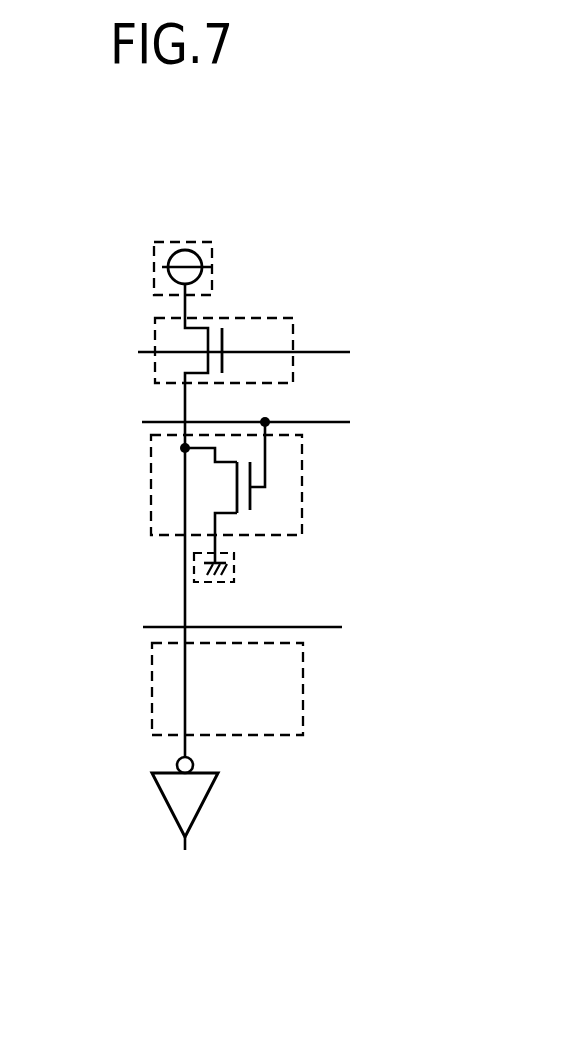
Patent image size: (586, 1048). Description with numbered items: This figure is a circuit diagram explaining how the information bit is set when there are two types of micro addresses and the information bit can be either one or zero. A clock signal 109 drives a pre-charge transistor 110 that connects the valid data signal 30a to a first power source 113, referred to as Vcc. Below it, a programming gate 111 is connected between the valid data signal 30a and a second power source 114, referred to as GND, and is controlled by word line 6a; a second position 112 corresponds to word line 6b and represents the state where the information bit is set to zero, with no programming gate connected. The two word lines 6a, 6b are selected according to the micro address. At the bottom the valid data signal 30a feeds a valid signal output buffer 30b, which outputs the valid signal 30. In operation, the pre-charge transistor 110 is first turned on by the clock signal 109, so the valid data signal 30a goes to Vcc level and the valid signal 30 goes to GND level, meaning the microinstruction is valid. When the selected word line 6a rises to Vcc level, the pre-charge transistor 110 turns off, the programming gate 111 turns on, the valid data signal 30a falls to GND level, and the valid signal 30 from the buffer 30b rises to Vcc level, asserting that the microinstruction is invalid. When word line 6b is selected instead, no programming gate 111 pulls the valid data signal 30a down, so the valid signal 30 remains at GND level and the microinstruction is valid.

The word line 6a is at (333, 418).
The word line 6b is at (335, 627).
The valid signal 30 is at (192, 838).
The valid data signal 30a is at (180, 592).
The valid signal output buffer 30b is at (218, 790).
The clock signal 109 is at (333, 348).
The pre-charge transistor 110 is at (262, 318).
The programming gate 111 is at (303, 493).
The state set for the information bit 112 is at (303, 662).
The first power source 113 is at (213, 244).
The second power source 114 is at (232, 583).